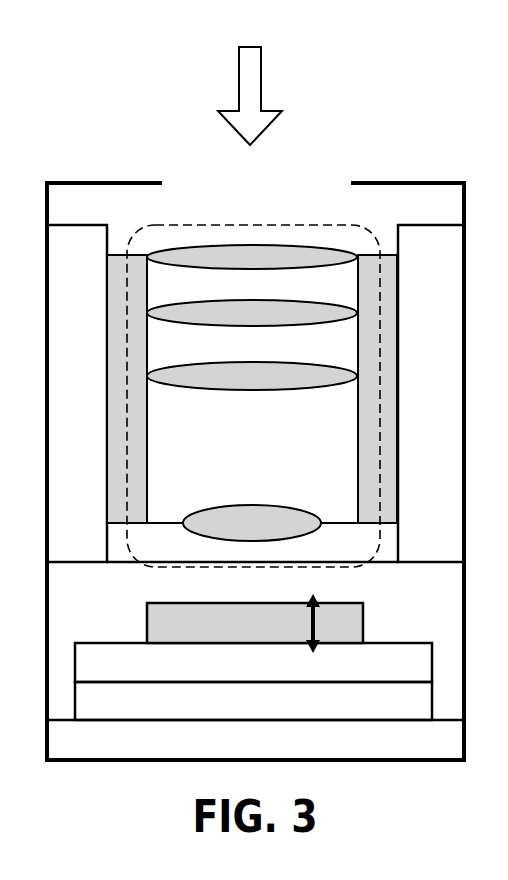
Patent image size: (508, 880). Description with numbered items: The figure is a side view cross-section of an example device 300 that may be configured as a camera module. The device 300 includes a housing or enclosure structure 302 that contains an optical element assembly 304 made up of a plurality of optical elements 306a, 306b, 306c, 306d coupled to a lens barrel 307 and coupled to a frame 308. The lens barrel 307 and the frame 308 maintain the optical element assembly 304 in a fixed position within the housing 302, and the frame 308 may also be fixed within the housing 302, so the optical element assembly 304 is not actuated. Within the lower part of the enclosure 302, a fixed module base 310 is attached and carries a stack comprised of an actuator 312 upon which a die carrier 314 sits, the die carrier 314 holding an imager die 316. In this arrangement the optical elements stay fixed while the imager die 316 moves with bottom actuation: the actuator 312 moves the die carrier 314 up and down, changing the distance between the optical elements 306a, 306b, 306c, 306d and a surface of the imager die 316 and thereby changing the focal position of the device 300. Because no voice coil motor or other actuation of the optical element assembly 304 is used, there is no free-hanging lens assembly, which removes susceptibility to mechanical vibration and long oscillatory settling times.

The device 300 is at (232, 388).
The housing 302 is at (45, 203).
The optical element assembly 304 is at (280, 215).
The optical element 306a is at (228, 267).
The optical element 306b is at (228, 323).
The optical element 306c is at (228, 387).
The optical element 306d is at (228, 534).
The lens barrel 307 is at (148, 447).
The frame 308 is at (59, 542).
The module base 310 is at (235, 750).
The actuator 312 is at (235, 711).
The die carrier 314 is at (235, 672).
The imager die 316 is at (236, 634).